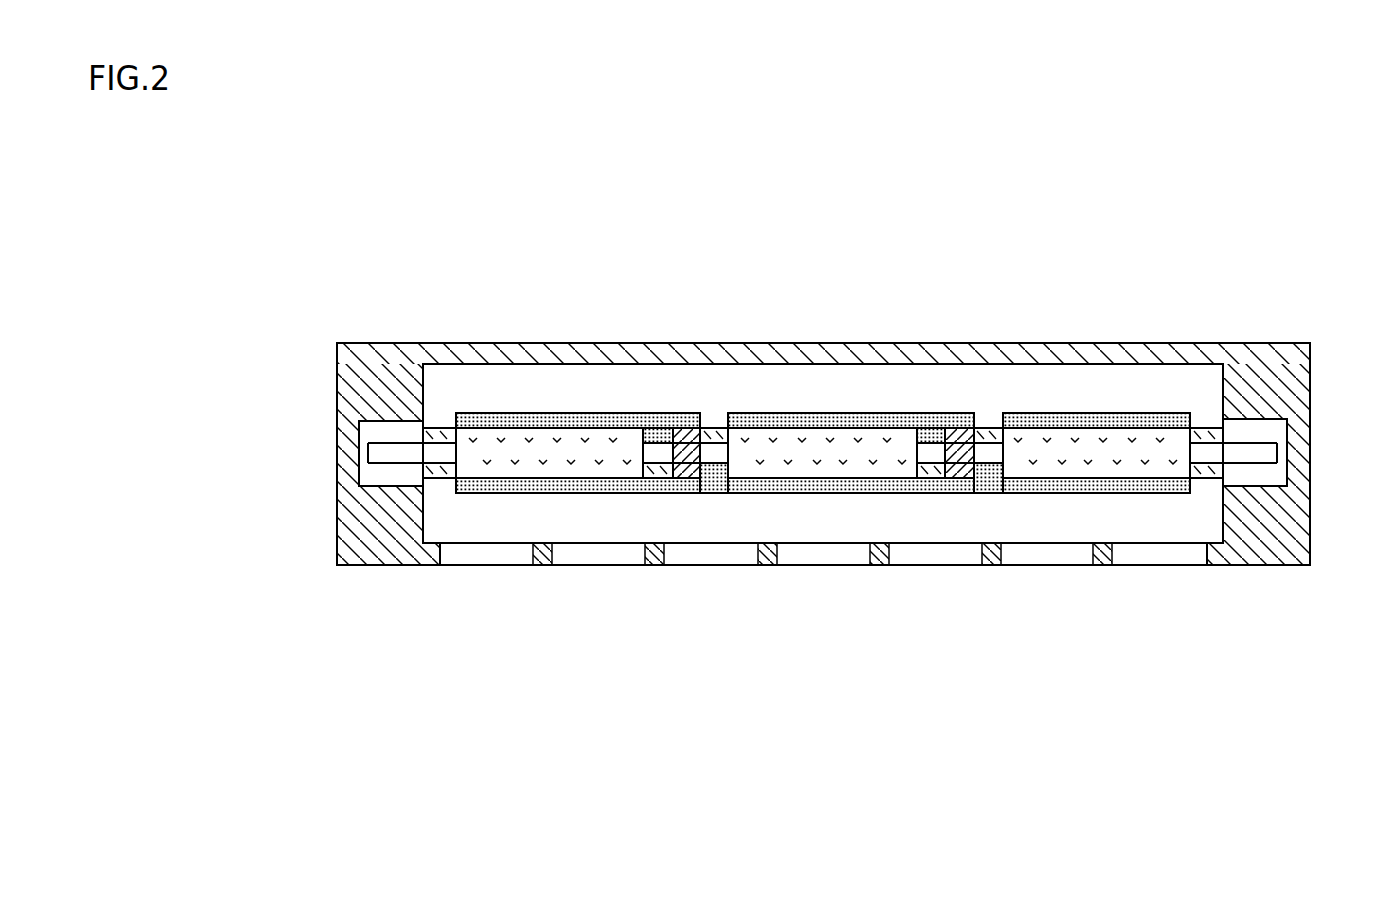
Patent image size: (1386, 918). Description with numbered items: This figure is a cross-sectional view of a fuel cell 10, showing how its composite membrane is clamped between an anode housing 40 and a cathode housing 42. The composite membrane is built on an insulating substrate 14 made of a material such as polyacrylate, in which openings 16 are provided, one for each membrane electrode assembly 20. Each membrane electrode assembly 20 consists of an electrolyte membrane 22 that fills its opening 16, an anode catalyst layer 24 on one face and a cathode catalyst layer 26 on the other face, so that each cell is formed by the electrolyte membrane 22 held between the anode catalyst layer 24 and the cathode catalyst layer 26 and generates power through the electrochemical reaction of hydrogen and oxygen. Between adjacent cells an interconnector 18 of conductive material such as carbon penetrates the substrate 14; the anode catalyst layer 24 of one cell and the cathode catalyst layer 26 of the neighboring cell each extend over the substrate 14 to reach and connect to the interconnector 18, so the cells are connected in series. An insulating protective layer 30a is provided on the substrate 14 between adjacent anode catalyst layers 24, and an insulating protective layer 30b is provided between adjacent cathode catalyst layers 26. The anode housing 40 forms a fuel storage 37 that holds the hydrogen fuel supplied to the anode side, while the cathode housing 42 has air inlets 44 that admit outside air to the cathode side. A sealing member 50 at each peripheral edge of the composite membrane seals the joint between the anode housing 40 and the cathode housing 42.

The fuel cell 10 is at (787, 709).
The substrate 14 is at (442, 452).
The openings 16 is at (465, 442).
The interconnector 18 is at (686, 428).
The membrane electrode assembly 20 is at (563, 388).
The electrolyte membrane 22 is at (529, 438).
The anode catalyst layer 24 is at (545, 413).
The cathode catalyst layer 26 is at (540, 495).
The insulating protective layer 30a is at (712, 437).
The insulating protective layer 30b is at (652, 478).
The fuel storage 37 is at (1197, 389).
The anode housing 40 is at (1222, 344).
The cathode housing 42 is at (1263, 565).
The air inlets 44 is at (1157, 565).
The sealing member 50 is at (375, 430).